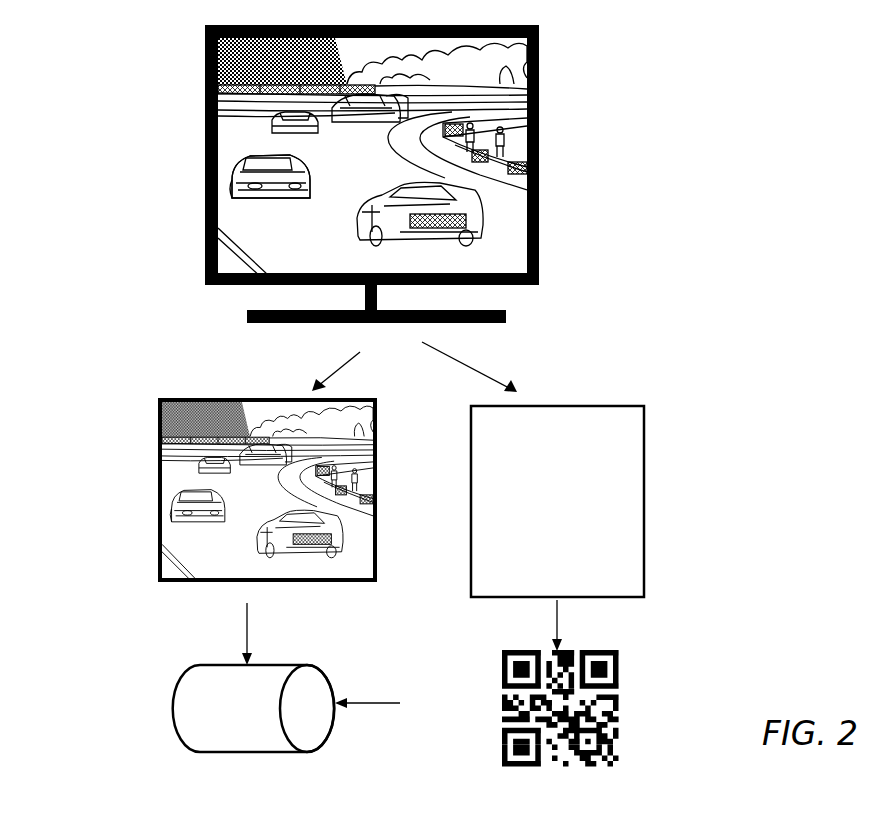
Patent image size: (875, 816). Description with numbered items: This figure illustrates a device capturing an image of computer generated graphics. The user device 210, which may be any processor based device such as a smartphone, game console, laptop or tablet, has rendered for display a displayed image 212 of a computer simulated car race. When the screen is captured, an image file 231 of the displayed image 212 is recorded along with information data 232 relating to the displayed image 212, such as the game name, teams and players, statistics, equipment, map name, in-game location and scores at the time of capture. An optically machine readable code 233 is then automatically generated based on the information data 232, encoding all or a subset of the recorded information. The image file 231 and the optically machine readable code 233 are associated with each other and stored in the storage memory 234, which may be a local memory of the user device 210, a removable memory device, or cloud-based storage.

The user device 210 is at (540, 90).
The displayed image 212 is at (237, 207).
The image file 231 is at (158, 402).
The information data 232 is at (645, 440).
The optically machine readable code 233 is at (618, 690).
The storage memory 234 is at (320, 668).